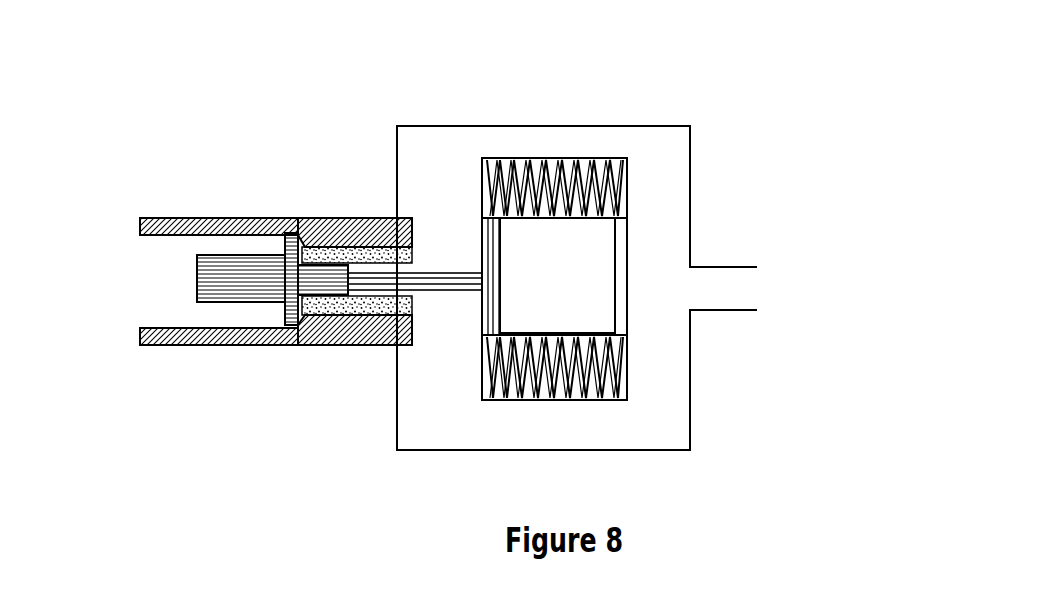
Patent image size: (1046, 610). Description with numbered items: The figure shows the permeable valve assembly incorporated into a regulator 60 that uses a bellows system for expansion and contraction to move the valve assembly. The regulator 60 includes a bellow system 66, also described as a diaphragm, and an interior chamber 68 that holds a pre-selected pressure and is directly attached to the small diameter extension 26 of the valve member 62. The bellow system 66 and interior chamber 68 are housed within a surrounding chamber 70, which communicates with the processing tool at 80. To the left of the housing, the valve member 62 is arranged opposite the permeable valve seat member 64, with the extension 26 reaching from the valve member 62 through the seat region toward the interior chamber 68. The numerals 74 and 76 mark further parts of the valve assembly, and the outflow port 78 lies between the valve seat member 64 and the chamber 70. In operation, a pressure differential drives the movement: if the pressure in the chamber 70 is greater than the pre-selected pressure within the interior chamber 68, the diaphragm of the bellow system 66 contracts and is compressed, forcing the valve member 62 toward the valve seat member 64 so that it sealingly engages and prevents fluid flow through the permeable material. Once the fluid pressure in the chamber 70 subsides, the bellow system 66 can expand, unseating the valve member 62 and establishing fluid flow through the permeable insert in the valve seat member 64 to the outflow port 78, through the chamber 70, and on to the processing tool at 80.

The regulator 60 is at (803, 158).
The chamber 70 is at (612, 137).
The processing tool 80 is at (742, 287).
The bellow system 66 is at (603, 186).
The interior chamber 68 is at (553, 273).
The extension 26 is at (458, 277).
The valve member 62 is at (258, 268).
The flange 76 is at (288, 345).
The outflow port 78 is at (393, 272).
The tube 74 is at (152, 288).
The permeable valve seat member 64 is at (350, 343).